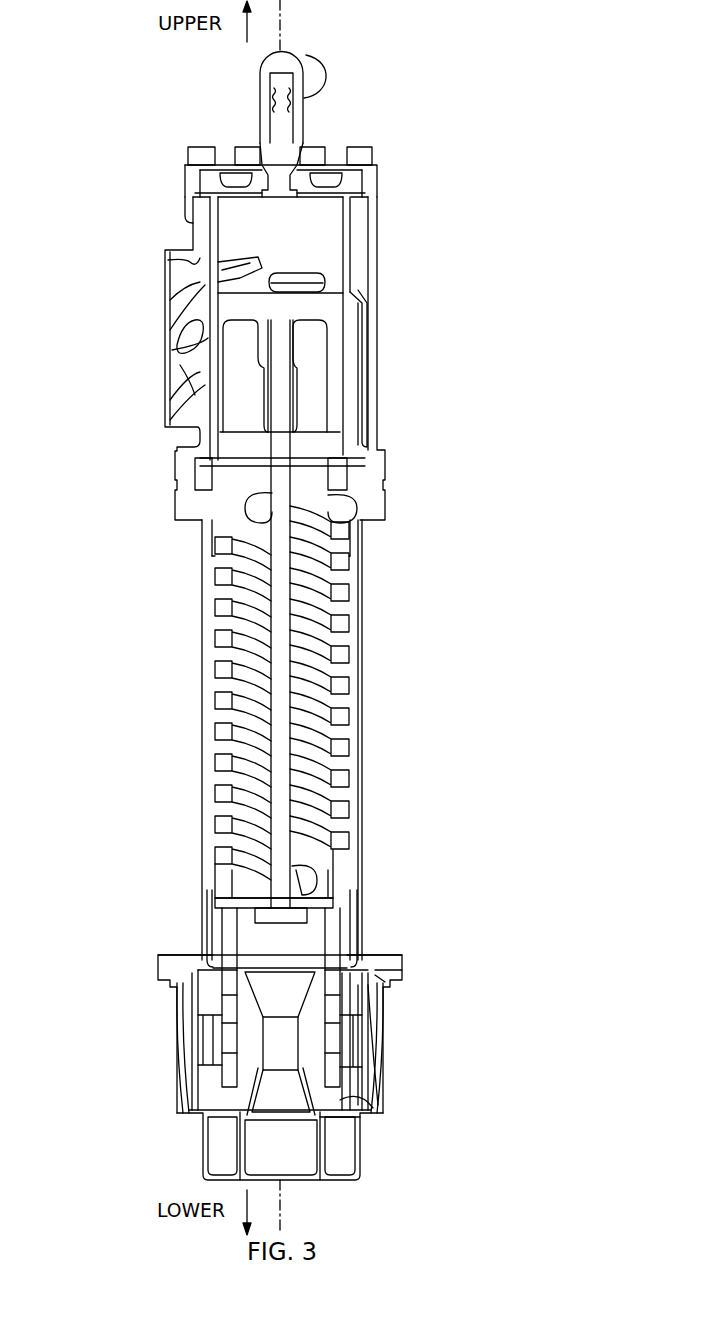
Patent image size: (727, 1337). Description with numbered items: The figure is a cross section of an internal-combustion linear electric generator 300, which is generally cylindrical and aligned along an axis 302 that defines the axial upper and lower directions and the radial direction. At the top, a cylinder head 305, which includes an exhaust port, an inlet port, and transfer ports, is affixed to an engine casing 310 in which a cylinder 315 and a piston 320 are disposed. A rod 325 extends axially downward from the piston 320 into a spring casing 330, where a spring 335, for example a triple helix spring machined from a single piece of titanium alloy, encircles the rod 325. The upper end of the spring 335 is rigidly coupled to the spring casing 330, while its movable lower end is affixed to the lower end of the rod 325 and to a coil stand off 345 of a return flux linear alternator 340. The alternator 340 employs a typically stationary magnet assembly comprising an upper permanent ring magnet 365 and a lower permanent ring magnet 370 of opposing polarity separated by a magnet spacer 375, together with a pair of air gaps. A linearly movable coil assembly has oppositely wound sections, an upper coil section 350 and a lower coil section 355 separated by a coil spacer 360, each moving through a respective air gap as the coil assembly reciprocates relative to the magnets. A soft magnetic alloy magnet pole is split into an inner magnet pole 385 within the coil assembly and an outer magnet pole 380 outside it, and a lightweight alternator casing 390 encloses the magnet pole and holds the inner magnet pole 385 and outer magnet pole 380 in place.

The internal-combustion linear electric generator 300 is at (512, 94).
The axis 302 is at (283, 24).
The cylinder head 305 is at (377, 183).
The engine casing 310 is at (377, 372).
The cylinder 315 is at (359, 233).
The piston 320 is at (328, 334).
The rod 325 is at (286, 405).
The spring casing 330 is at (361, 740).
The spring 335 is at (341, 623).
The return flux linear alternator 340 is at (118, 890).
The coil stand off 345 is at (363, 925).
The upper coil section 350 is at (334, 1005).
The lower coil section 355 is at (337, 1075).
The coil spacer 360 is at (369, 1052).
The upper permanent ring magnet 365 is at (386, 980).
The lower permanent ring magnet 370 is at (383, 1093).
The magnet spacer 375 is at (366, 1043).
The outer magnet pole 380 is at (371, 1023).
The inner magnet pole 385 is at (374, 1110).
The alternator casing 390 is at (361, 1150).